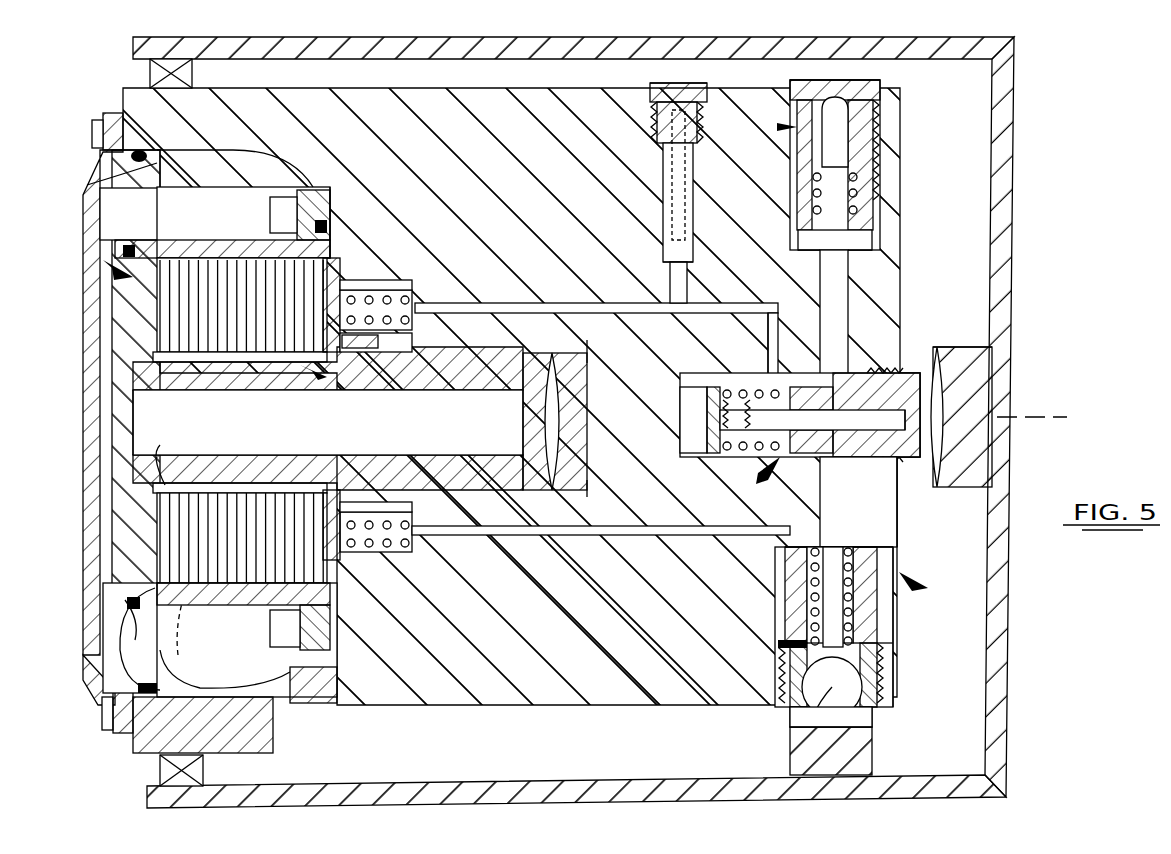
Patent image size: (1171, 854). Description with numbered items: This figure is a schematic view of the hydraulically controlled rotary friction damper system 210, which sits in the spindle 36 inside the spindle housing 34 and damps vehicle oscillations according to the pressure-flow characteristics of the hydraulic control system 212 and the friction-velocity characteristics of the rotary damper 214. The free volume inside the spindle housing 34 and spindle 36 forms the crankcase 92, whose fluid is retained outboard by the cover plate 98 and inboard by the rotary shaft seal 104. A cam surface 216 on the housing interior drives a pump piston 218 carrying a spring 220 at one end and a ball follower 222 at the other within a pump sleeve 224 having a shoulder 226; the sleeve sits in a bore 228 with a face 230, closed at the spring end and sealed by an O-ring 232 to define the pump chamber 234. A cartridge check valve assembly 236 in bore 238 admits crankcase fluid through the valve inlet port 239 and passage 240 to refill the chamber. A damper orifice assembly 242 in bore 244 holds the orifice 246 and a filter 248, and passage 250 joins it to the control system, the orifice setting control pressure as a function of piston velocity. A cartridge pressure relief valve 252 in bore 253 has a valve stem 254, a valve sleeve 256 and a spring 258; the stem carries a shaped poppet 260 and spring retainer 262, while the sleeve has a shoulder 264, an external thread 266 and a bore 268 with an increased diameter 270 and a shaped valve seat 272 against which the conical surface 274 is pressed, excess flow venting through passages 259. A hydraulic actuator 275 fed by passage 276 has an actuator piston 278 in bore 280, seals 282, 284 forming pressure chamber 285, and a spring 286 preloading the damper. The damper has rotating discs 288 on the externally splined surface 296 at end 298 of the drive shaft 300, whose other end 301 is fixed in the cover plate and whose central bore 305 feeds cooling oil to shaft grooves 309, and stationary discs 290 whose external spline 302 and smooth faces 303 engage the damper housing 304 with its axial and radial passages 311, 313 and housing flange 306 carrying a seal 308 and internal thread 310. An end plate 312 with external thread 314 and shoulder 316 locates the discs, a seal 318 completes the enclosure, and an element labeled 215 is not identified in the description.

The spindle housing 34 is at (665, 765).
The spindle 36 is at (682, 342).
The crankcase 92 is at (540, 68).
The cover plate 98 is at (1003, 633).
The rotary shaft seal 104 is at (163, 770).
The hydraulically controlled rotary friction damper system 210 is at (83, 330).
The hydraulic control system 212 is at (876, 627).
The rotary friction damper 214 is at (373, 398).
The seal 215 is at (778, 648).
The cam surface 216 is at (872, 722).
The pump piston 218 is at (790, 598).
The spring 220 is at (850, 622).
The ball follower 222 is at (800, 715).
The pump sleeve 224 is at (782, 645).
The shoulder 226 is at (875, 708).
The bore 228 is at (858, 640).
The face 230 is at (793, 562).
The O-ring 232 is at (887, 700).
The pump chamber 234 is at (897, 545).
The cartridge check valve assembly 236 is at (780, 120).
The bore 238 is at (873, 232).
The valve inlet port 239 is at (880, 90).
The passage 240 is at (873, 283).
The damper orifice assembly 242 is at (650, 117).
The bore 244 is at (690, 183).
The orifice 246 is at (660, 85).
The filter 248 is at (667, 200).
The passage 250 is at (517, 303).
The cartridge pressure relief valve 252 is at (770, 455).
The bore 253 is at (680, 387).
The valve stem 254 is at (825, 457).
The valve sleeve 256 is at (823, 373).
The spring 258 is at (683, 455).
The passages 259 is at (852, 377).
The shaped poppet 260 is at (920, 413).
The spring retainer 262 is at (720, 387).
The shoulder 264 is at (858, 502).
The external thread 266 is at (838, 462).
The bore 268 is at (820, 252).
The increased diameter 270 is at (935, 405).
The shaped valve seat 272 is at (890, 530).
The conical surface 274 is at (925, 447).
The hydraulic actuator 275 is at (337, 698).
The passage 276 is at (645, 535).
The actuator piston 278 is at (322, 368).
The bore 280 is at (413, 550).
The seal 282 is at (340, 262).
The seal 284 is at (365, 500).
The pressure chamber 285 is at (360, 262).
The spring 286 is at (412, 295).
The rotating discs 288 is at (327, 222).
The stationary discs 290 is at (245, 335).
The externally splined surface 296 is at (156, 422).
The end 298 is at (178, 461).
The drive shaft 300 is at (430, 385).
The other end 301 is at (947, 347).
The external spline 302 is at (333, 215).
The faces 303 is at (245, 255).
The damper housing 304 is at (243, 595).
The central bore 305 is at (560, 398).
The housing flange 306 is at (342, 130).
The seal 308 is at (320, 187).
The shaft grooves 309 is at (328, 382).
The internal thread 310 is at (160, 283).
The axial passages 311 is at (180, 658).
The end plate 312 is at (110, 648).
The radial passages 313 is at (170, 676).
The external thread 314 is at (108, 636).
The shoulder 316 is at (157, 235).
The seal 318 is at (143, 162).